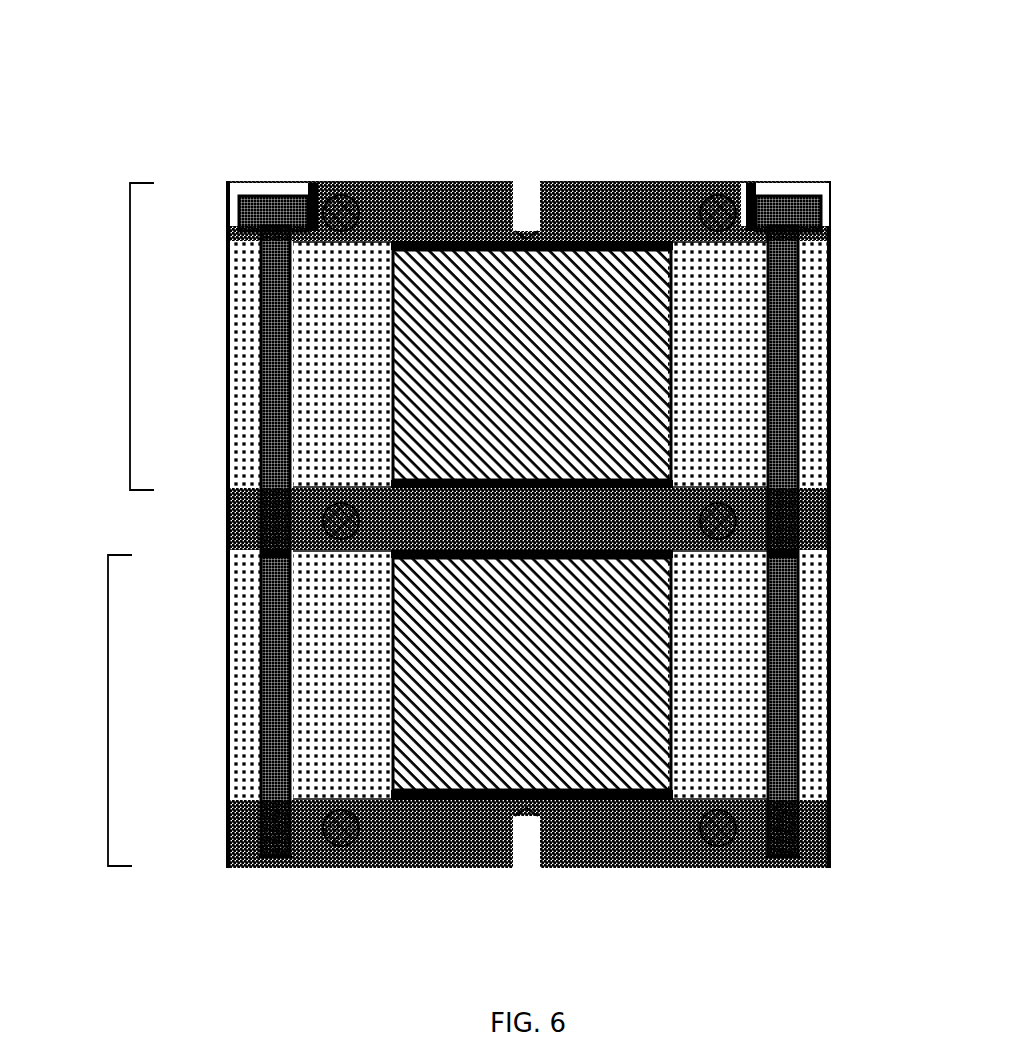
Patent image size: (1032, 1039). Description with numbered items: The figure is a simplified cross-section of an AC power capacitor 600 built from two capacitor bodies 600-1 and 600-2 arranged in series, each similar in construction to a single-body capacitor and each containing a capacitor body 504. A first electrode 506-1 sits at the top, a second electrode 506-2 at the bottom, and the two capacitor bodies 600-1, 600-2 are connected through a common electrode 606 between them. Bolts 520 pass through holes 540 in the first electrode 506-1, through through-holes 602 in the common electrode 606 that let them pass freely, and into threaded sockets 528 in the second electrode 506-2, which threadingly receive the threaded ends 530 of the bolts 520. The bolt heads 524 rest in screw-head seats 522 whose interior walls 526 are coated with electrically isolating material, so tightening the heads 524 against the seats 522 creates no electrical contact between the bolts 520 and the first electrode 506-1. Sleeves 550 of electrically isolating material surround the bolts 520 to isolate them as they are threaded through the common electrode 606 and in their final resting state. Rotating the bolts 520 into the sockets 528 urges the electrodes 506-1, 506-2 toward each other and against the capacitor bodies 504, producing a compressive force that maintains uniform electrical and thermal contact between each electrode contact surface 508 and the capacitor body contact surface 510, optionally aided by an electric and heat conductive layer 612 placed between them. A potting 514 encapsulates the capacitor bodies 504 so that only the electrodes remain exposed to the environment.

The AC power capacitor 600 is at (474, 84).
The capacitor body 600-1 is at (100, 700).
The capacitor body 600-2 is at (122, 355).
The capacitor body 504 is at (413, 236).
The first electrode 506-1 is at (588, 172).
The second electrode 506-2 is at (370, 830).
The electrode contact surface 508 is at (316, 256).
The capacitor body contact surface 510 is at (638, 216).
The potting 514 is at (318, 708).
The bolt 520 is at (268, 330).
The screw-head seat 522 is at (288, 172).
The bolt head 524 is at (256, 164).
The interior wall of seat 526 is at (298, 183).
The threaded socket 528 is at (287, 850).
The threaded end 530 is at (255, 838).
The hole 540 is at (250, 262).
The sleeve 550 is at (245, 378).
The through-hole 602 is at (256, 548).
The common electrode 606 is at (823, 518).
The electric and heat conductive layer 612 is at (480, 265).